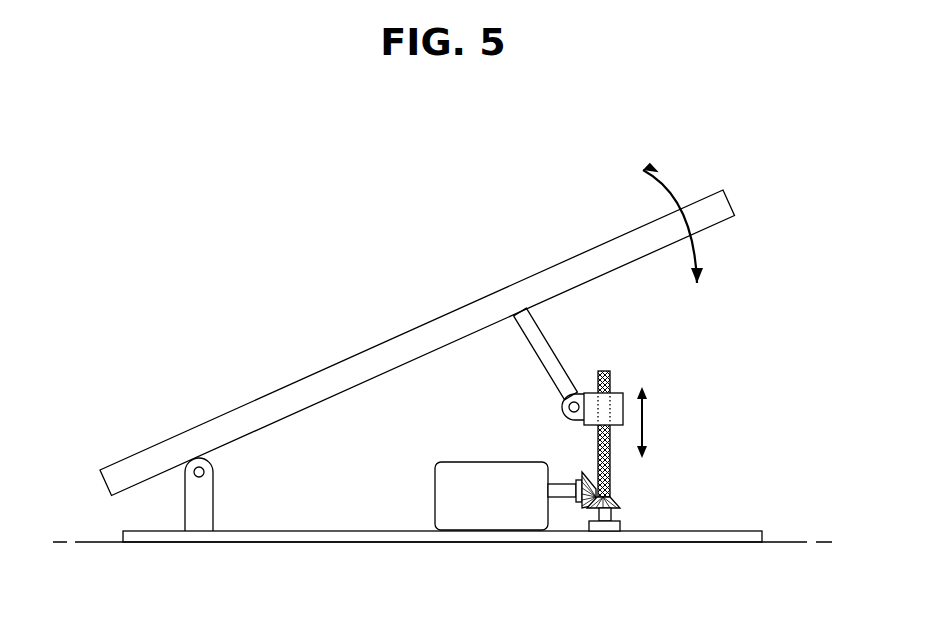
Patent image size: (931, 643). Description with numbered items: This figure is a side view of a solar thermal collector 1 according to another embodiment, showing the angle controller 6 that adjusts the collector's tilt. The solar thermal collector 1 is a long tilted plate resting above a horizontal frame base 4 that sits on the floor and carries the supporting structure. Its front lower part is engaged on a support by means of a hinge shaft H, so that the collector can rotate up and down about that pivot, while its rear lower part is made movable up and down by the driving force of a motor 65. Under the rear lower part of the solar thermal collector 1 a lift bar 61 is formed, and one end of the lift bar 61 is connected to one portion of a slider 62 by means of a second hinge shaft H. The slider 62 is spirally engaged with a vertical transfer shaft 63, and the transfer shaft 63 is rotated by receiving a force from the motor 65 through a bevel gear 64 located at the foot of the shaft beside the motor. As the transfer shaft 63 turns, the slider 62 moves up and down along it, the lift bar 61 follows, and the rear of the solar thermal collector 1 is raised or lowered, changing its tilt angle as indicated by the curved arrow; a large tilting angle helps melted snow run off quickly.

The solar thermal collector 1 is at (400, 334).
The horizontal frame base 4 is at (320, 544).
The angle controller 6 is at (535, 490).
The lift bar 61 is at (544, 337).
The slider 62 is at (616, 391).
The transfer shaft 63 is at (612, 470).
The bevel gear 64 is at (624, 503).
The motor 65 is at (447, 497).
The hinge shaft H is at (204, 472).